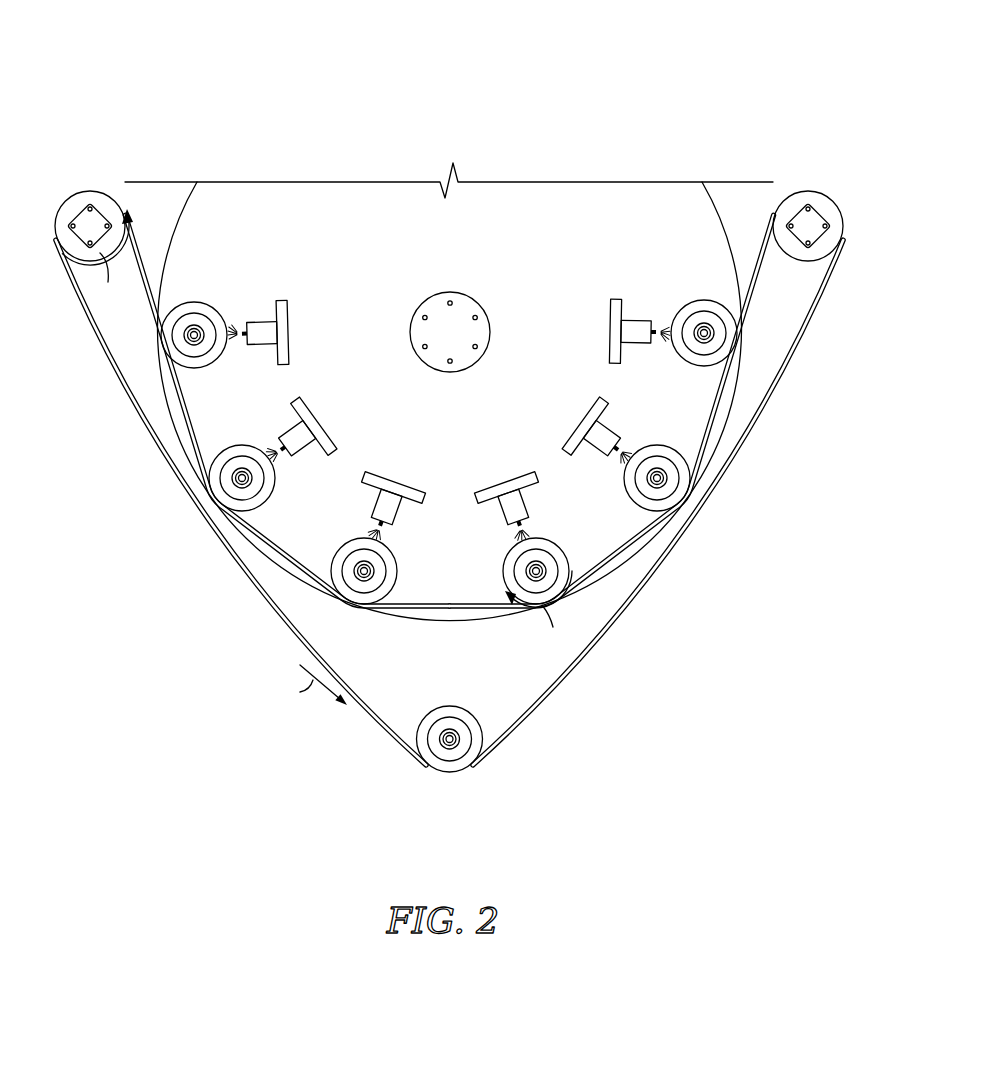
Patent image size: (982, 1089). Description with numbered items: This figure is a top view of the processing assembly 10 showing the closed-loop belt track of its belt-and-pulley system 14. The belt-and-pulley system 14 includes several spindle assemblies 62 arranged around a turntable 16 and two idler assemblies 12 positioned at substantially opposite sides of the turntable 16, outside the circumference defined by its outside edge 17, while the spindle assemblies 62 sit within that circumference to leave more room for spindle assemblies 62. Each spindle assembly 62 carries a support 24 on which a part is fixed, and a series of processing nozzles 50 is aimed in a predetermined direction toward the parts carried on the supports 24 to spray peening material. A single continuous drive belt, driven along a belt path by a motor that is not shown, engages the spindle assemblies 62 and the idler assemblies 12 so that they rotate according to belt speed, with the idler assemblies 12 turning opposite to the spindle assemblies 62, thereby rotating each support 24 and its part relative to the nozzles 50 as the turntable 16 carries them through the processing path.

The processing assembly 10 is at (166, 96).
The idler assembly 12 is at (92, 191).
The belt-and-pulley system 14 is at (598, 665).
The turntable 16 is at (497, 218).
The outside edge 17 is at (723, 222).
The support 24 is at (194, 330).
The processing nozzle 50 is at (260, 326).
The spindle assembly 62 is at (171, 346).